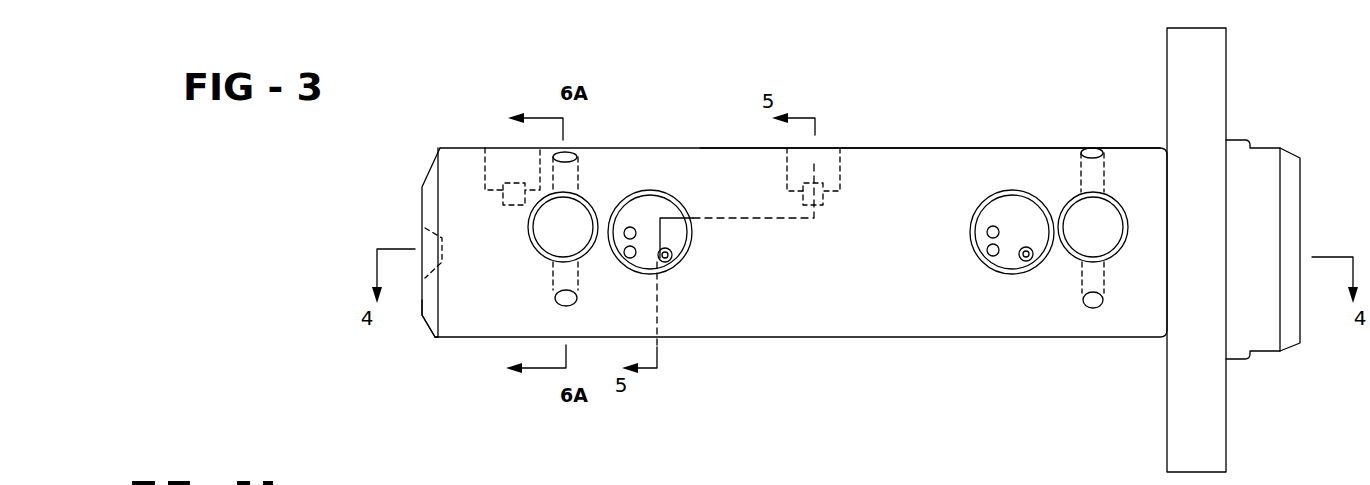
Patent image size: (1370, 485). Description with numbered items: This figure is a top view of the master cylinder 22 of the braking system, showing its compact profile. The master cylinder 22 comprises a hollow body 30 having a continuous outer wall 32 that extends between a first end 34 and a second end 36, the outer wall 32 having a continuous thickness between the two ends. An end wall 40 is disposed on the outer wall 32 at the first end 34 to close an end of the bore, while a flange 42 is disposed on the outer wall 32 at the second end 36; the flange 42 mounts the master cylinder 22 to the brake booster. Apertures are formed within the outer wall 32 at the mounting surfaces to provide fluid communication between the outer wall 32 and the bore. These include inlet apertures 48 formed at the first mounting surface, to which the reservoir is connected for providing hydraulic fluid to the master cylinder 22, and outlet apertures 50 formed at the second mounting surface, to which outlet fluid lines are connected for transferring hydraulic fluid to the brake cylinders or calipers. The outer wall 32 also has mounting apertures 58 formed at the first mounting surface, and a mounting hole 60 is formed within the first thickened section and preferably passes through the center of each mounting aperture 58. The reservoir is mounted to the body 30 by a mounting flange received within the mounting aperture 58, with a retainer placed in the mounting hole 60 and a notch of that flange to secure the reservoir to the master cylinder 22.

The master cylinder 22 is at (952, 105).
The hollow body 30 is at (863, 303).
The outer wall 32 is at (1037, 147).
The first end 34 is at (440, 341).
The second end 36 is at (1263, 360).
The end wall 40 is at (432, 200).
The flange 42 is at (1210, 62).
The inlet aperture 48 is at (646, 230).
The outlet aperture 50 is at (505, 140).
The mounting aperture 58 is at (548, 240).
The mounting hole 60 is at (570, 150).